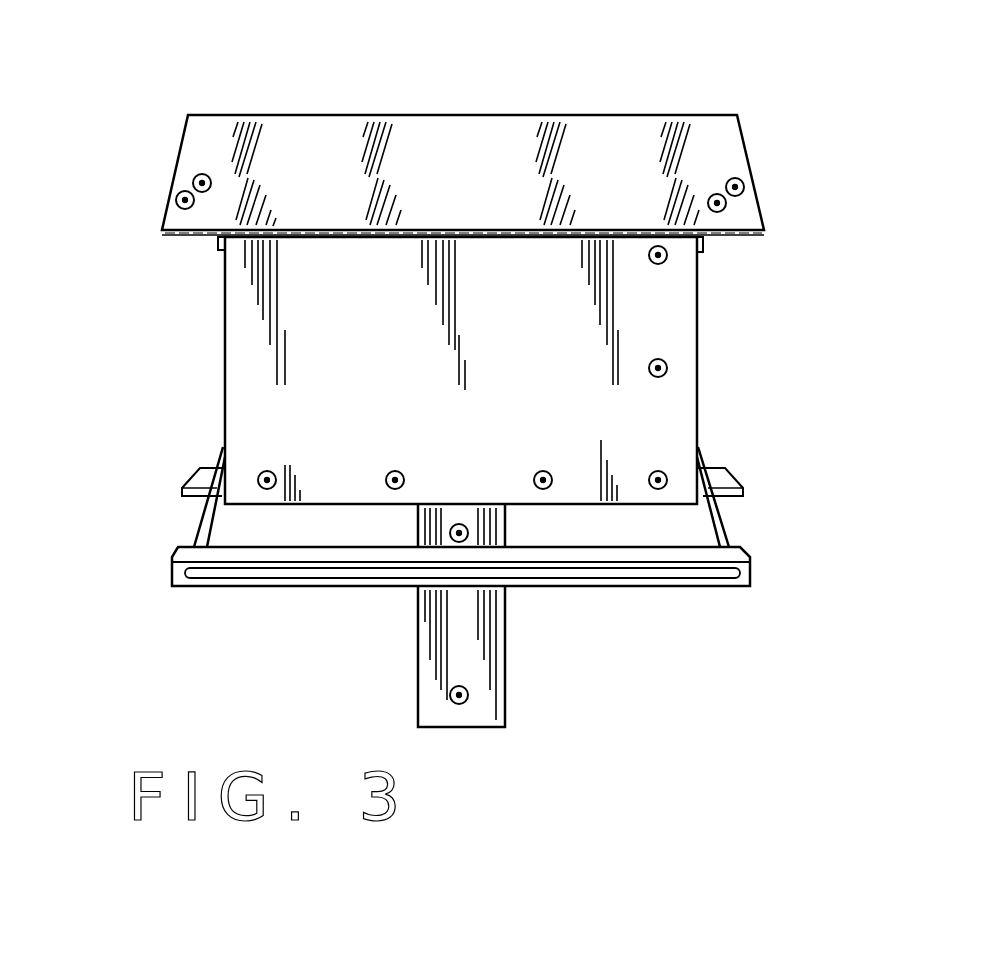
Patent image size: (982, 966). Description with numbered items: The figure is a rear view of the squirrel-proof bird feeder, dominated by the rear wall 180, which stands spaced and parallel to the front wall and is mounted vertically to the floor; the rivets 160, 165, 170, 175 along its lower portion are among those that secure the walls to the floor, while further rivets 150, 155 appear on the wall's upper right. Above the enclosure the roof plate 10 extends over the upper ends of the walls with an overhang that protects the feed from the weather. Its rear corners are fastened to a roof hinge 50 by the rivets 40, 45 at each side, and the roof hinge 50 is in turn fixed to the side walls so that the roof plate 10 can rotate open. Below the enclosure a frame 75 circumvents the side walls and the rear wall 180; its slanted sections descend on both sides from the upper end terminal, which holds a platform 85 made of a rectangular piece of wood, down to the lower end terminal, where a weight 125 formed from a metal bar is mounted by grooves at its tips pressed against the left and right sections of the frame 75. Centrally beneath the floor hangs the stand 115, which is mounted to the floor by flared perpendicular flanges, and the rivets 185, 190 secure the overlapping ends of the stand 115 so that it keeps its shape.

The roof plate 10 is at (500, 150).
The rivet 40 is at (195, 178).
The rivet 45 is at (177, 198).
The roof hinge 50 is at (216, 239).
The frame 75 is at (732, 525).
The platform 85 is at (727, 478).
The stand 115 is at (432, 660).
The weight 125 is at (762, 582).
The rivet 150 is at (666, 260).
The rivet 155 is at (668, 368).
The rivet 160 is at (653, 470).
The rivet 165 is at (543, 467).
The rivet 170 is at (398, 467).
The rivet 175 is at (275, 466).
The rear wall 180 is at (255, 355).
The rivet 185 is at (469, 532).
The rivet 190 is at (469, 693).